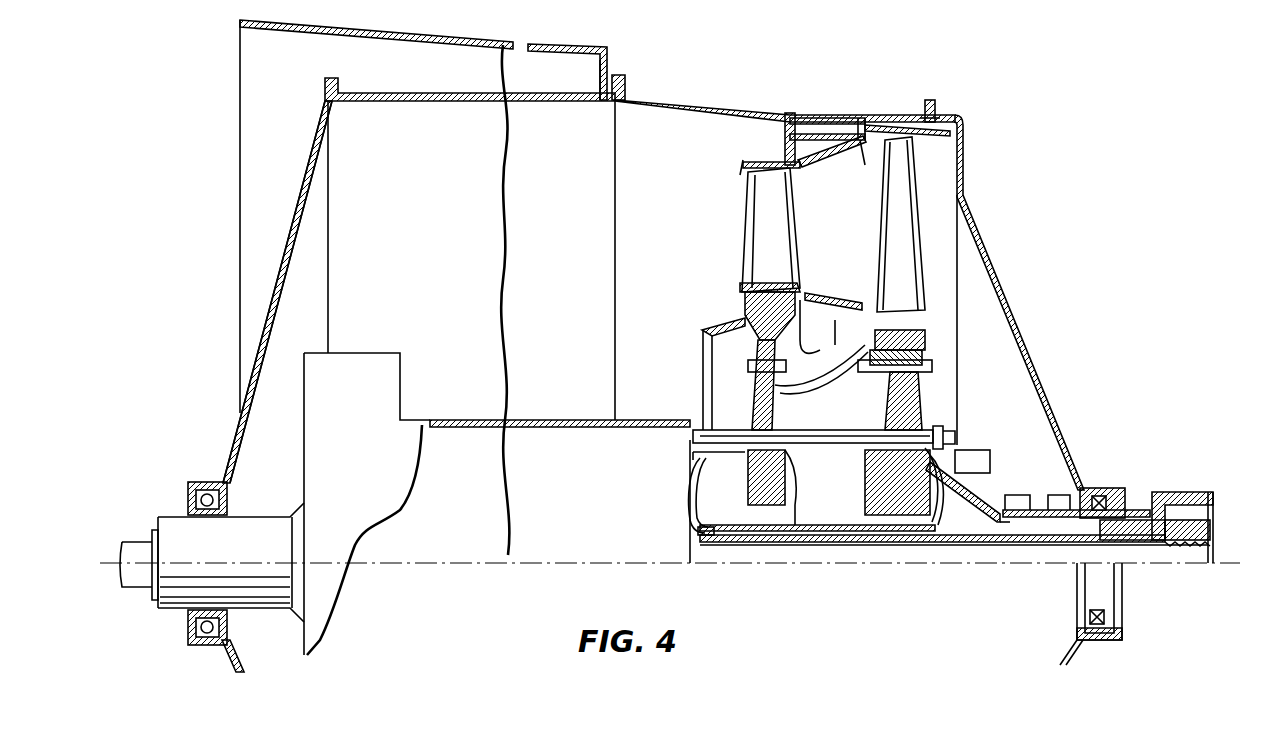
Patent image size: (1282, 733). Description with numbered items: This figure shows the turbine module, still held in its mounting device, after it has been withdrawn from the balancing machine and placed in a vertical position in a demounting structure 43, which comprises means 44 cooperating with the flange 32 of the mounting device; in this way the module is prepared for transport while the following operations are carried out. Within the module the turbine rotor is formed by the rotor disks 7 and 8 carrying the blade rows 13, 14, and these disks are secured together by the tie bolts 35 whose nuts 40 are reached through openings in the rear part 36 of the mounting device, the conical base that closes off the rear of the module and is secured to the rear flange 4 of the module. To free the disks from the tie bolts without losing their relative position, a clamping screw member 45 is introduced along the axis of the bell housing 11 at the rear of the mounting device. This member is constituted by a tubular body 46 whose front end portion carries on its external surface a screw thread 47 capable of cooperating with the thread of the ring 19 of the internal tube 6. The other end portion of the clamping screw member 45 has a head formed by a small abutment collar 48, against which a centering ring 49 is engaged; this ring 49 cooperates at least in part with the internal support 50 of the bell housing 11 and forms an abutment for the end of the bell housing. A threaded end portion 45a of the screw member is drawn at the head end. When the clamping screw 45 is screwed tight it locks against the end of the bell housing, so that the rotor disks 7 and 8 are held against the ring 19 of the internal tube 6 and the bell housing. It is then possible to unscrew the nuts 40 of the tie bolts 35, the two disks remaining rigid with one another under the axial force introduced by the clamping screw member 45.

The rear flange 4 is at (938, 108).
The internal tube 6 is at (818, 518).
The rotor disk 7 is at (784, 490).
The rotor disk 8 is at (868, 497).
The bell housing 11 is at (978, 492).
The blade row 13 is at (780, 245).
The blade row 14 is at (910, 245).
The ring 19 is at (690, 497).
The flange 32 is at (624, 84).
The tie bolts 35 is at (828, 440).
The rear part 36 is at (1040, 347).
The nuts 40 is at (932, 428).
The demounting structure 43 is at (552, 50).
The means 44 is at (598, 70).
The clamping screw member 45 is at (819, 546).
The threaded shaft end 45a is at (1210, 546).
The tubular body 46 is at (935, 545).
The screw thread 47 is at (700, 536).
The abutment collar 48 is at (1185, 520).
The centering ring 49 is at (1165, 491).
The internal support 50 is at (1128, 512).